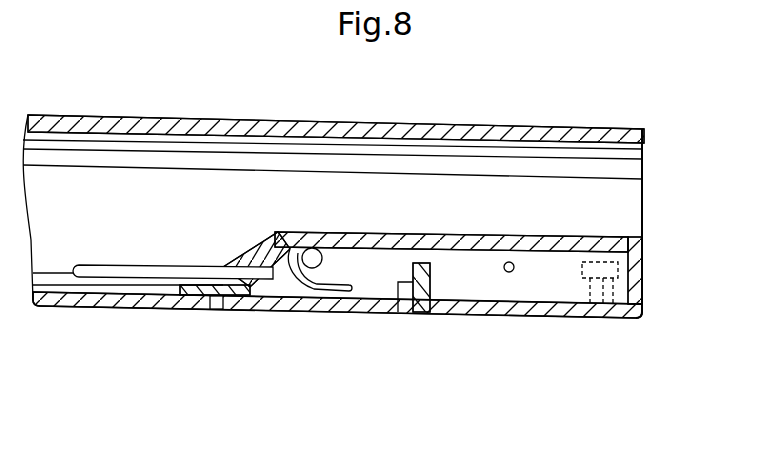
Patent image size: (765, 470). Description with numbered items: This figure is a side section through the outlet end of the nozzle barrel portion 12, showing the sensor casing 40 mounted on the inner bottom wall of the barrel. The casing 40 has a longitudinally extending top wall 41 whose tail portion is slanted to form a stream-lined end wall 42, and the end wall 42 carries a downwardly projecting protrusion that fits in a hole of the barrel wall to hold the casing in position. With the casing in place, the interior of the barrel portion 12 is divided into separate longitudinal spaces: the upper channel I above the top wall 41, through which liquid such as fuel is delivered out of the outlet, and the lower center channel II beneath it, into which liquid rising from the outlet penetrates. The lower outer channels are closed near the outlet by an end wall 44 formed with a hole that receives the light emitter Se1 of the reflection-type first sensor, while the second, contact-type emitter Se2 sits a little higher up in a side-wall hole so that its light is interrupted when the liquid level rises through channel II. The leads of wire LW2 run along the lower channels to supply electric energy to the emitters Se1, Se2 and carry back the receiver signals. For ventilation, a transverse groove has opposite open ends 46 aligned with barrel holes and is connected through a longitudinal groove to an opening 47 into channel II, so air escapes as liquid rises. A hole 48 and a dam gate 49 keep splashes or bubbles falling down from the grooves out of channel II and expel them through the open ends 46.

The upper space or channel I is at (617, 198).
The lower center space or channel II is at (618, 282).
The barrel portion 12 is at (568, 316).
The sensor casing 40 is at (448, 192).
The top wall 41 is at (473, 240).
The stream-lined end wall 42 is at (213, 310).
The end wall 44 is at (600, 322).
The open end 46 is at (312, 258).
The opening 47 is at (430, 252).
The hole 48 is at (405, 312).
The dam gate 49 is at (421, 263).
The leads of wire LW2 is at (127, 273).
The light emitter Se1 is at (617, 322).
The emitter Se2 is at (509, 272).